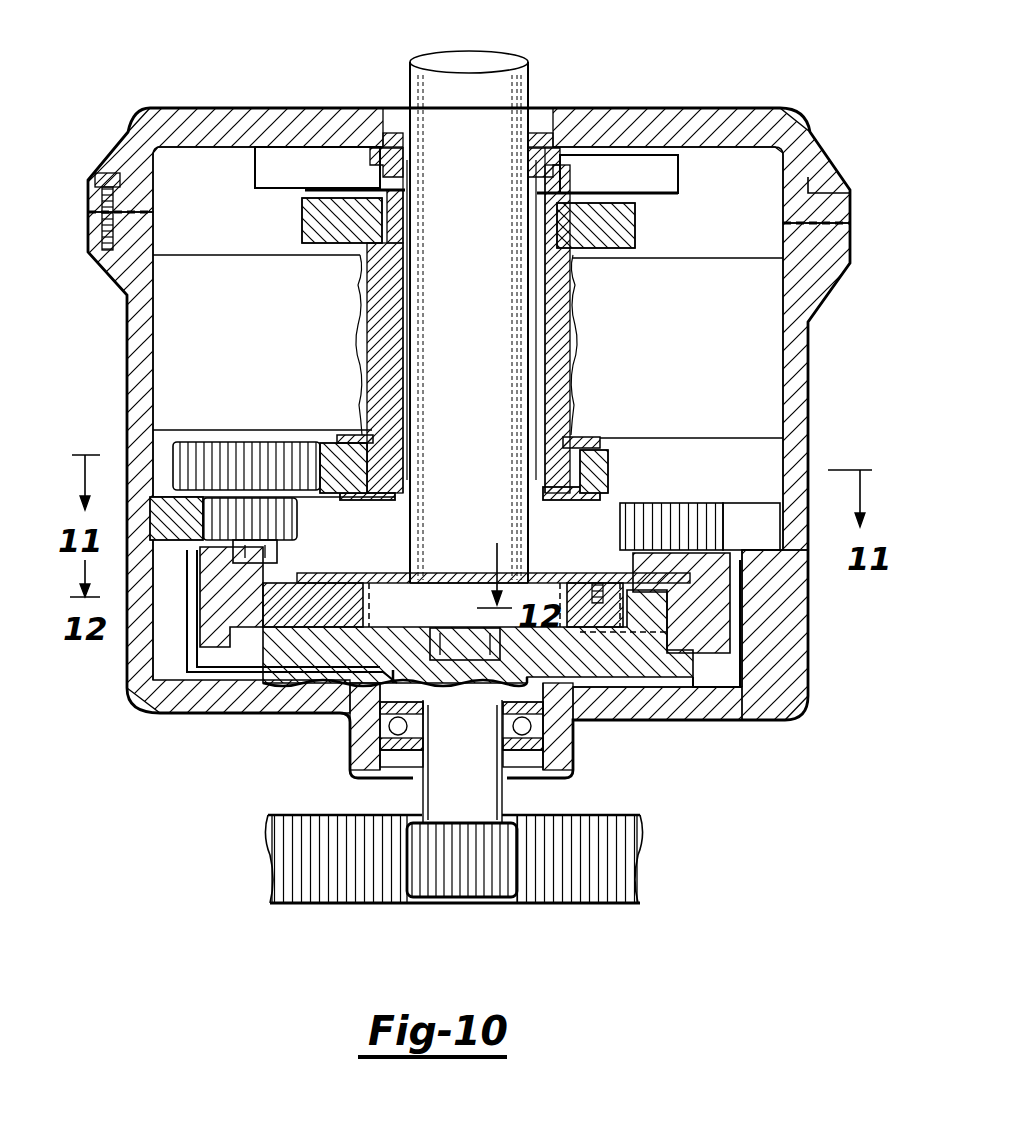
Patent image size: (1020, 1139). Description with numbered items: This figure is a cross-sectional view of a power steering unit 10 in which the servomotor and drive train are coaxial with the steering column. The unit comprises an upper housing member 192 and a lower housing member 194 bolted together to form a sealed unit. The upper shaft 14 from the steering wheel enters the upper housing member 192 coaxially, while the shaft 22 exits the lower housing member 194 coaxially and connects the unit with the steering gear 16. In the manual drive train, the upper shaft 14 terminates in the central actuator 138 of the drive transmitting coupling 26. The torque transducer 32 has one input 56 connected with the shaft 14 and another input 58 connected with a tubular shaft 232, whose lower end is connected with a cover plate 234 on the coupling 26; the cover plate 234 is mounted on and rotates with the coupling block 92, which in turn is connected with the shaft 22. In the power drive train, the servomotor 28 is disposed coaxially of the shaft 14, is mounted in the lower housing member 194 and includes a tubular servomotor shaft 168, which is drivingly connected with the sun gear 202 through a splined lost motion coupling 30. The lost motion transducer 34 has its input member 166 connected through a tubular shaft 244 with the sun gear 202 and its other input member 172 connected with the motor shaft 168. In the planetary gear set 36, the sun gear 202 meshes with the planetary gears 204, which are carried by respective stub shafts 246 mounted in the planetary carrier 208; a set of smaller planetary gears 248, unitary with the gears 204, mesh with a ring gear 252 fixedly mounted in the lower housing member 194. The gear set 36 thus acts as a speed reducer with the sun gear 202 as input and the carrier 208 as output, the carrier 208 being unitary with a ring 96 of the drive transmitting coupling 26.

The power steering unit 10 is at (782, 100).
The upper shaft 14 is at (512, 95).
The steering gear 16 is at (515, 917).
The shaft 22 is at (500, 800).
The drive transmitting coupling 26 is at (722, 665).
The servomotor 28 is at (768, 358).
The lost motion coupling 30 is at (600, 447).
The torque transducer 32 is at (692, 178).
The lost motion transducer 34 is at (652, 237).
The planetary gear set 36 is at (303, 428).
The input 56 is at (597, 152).
The other input 58 is at (647, 195).
The coupling block 92 is at (627, 655).
The ring 96 is at (194, 612).
The central actuator 138 is at (437, 585).
The input member 166 is at (327, 197).
The servomotor shaft 168 is at (560, 385).
The other input member 172 is at (327, 243).
The upper housing member 192 is at (790, 145).
The lower housing member 194 is at (810, 665).
The sun gear 202 is at (608, 470).
The planetary gears 204 is at (200, 447).
The planetary carrier 208 is at (240, 592).
The tubular shaft 232 is at (547, 320).
The cover plate 234 is at (568, 580).
The tubular shaft 244 is at (395, 345).
The stub shafts 246 is at (262, 556).
The smaller planetary gears 248 is at (290, 513).
The ring gear 252 is at (765, 465).